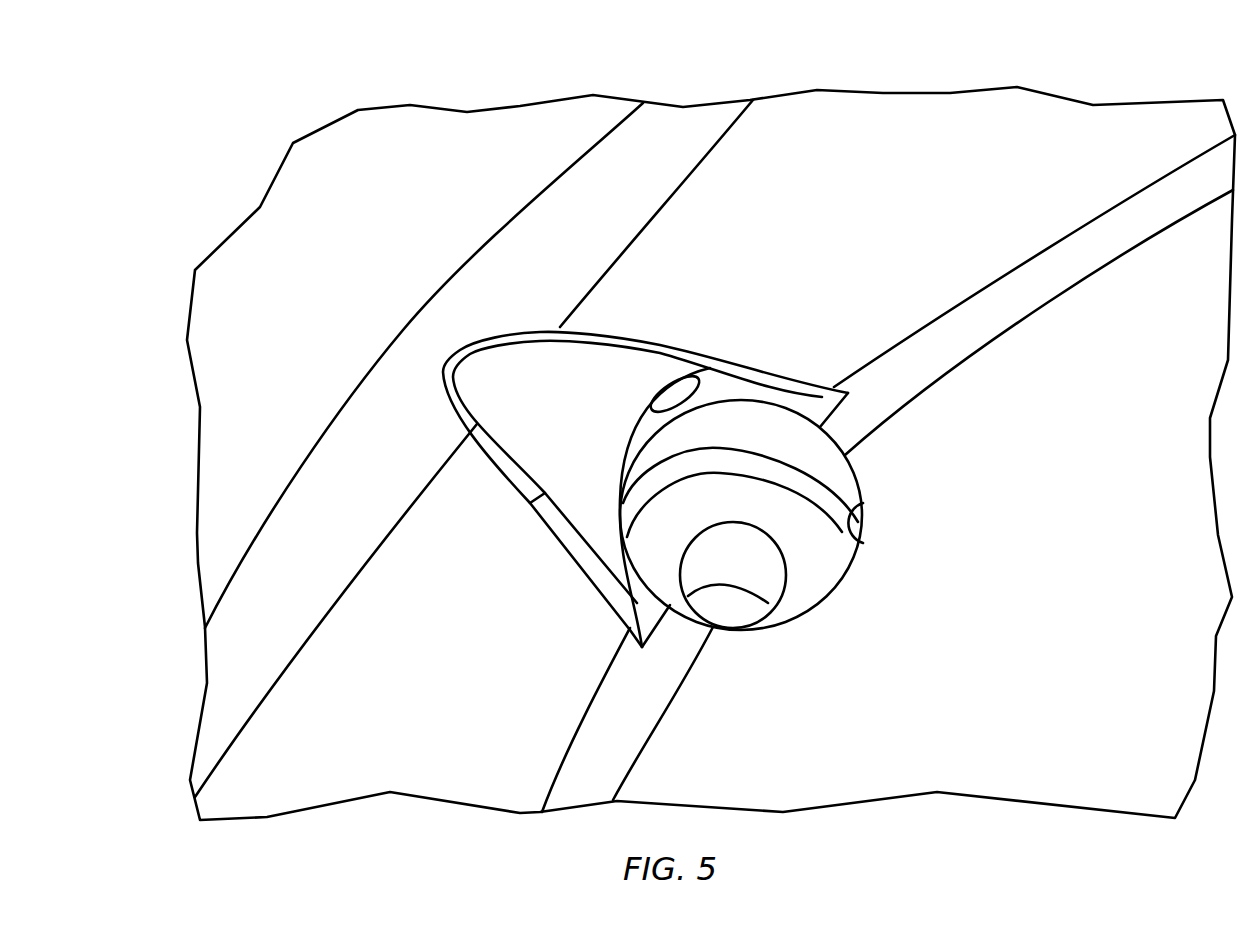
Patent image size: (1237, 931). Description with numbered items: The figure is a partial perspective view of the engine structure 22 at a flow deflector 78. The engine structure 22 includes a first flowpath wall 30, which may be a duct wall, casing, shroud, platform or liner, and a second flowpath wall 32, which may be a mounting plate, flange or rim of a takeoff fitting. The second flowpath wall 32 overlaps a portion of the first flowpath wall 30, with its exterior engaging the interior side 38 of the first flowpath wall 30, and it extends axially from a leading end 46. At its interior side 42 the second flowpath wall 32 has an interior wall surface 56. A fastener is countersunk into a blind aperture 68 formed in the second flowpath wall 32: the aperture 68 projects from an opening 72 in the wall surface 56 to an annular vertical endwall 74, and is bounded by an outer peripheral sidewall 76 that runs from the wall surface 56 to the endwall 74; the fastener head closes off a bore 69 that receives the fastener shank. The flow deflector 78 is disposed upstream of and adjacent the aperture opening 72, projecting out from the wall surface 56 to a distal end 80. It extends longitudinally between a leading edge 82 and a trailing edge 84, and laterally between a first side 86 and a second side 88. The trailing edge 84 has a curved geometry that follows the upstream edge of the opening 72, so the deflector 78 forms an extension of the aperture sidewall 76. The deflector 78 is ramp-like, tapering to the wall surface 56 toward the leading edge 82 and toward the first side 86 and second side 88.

The engine structure 22 is at (236, 144).
The interior side of the first flowpath wall 38 is at (367, 140).
The first flowpath wall 30 is at (470, 103).
The second flowpath wall 32 is at (720, 90).
The interior side of the second flowpath wall 42 is at (1063, 127).
The interior wall surface 56 is at (1063, 127).
The leading end of the second flowpath wall 46 is at (403, 328).
The flow deflector 78 is at (542, 316).
The first side of the flow deflector 86 is at (628, 350).
The distal end of the flow deflector 80 is at (631, 398).
The trailing edge of the flow deflector 84 is at (682, 398).
The leading edge of the flow deflector 82 is at (445, 367).
The second side of the flow deflector 88 is at (533, 505).
The blind aperture 68 is at (845, 480).
The outer peripheral sidewall of the aperture 76 is at (863, 543).
The vertical endwall of the aperture 74 is at (810, 578).
The opening of the aperture 72 is at (820, 603).
The bore 69 is at (737, 603).